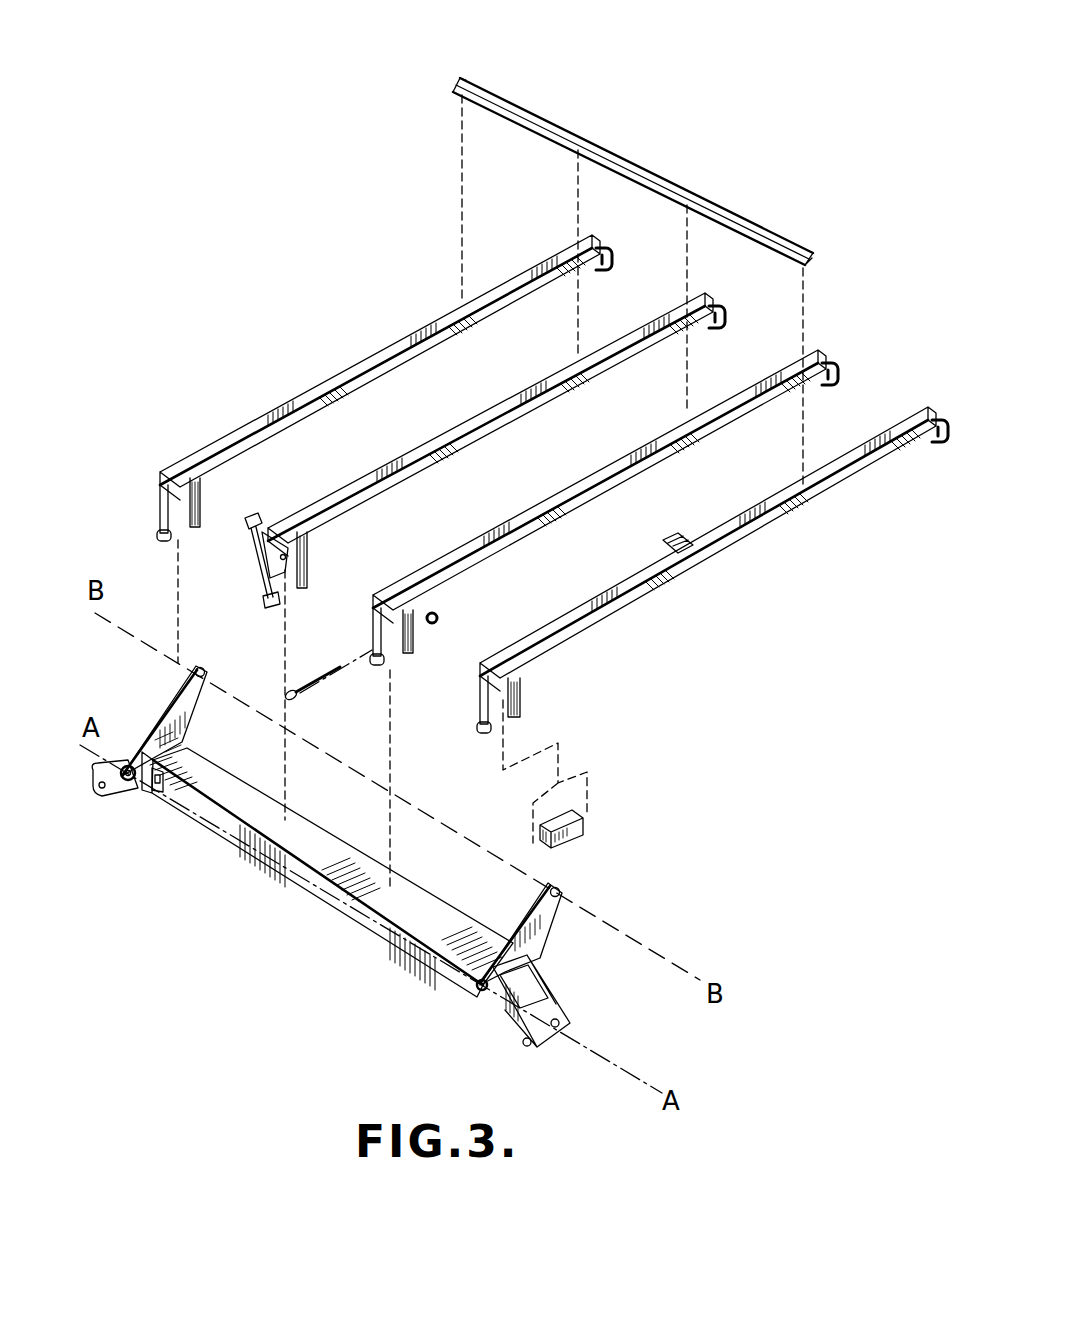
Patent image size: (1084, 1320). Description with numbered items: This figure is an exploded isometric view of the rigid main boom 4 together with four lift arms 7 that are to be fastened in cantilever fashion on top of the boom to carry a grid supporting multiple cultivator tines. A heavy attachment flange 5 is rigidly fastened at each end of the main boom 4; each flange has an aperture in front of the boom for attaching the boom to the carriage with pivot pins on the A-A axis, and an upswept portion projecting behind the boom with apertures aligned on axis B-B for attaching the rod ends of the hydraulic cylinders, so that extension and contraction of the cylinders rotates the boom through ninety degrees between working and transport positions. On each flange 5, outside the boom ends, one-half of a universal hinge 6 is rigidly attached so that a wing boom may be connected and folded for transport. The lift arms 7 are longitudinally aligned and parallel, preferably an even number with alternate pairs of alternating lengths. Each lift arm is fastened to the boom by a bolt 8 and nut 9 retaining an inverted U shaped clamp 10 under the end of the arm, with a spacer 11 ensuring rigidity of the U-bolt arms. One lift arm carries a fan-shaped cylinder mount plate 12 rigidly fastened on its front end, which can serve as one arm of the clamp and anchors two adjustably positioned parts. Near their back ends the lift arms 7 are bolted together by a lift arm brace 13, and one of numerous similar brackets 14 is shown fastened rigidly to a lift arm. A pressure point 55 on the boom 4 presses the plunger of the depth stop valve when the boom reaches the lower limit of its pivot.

The main boom 4 is at (353, 900).
The attachment flange 5 is at (172, 703).
The universal hinge 6 is at (108, 792).
The lift arm 7 is at (413, 332).
The bolt 8 is at (305, 688).
The nut 9 is at (440, 618).
The inverted U shaped clamp 10 is at (160, 510).
The spacer 11 is at (565, 836).
The cylinder mount plate 12 is at (262, 552).
The lift arm brace 13 is at (580, 146).
The bracket 14 is at (661, 547).
The pressure point 55 is at (184, 790).